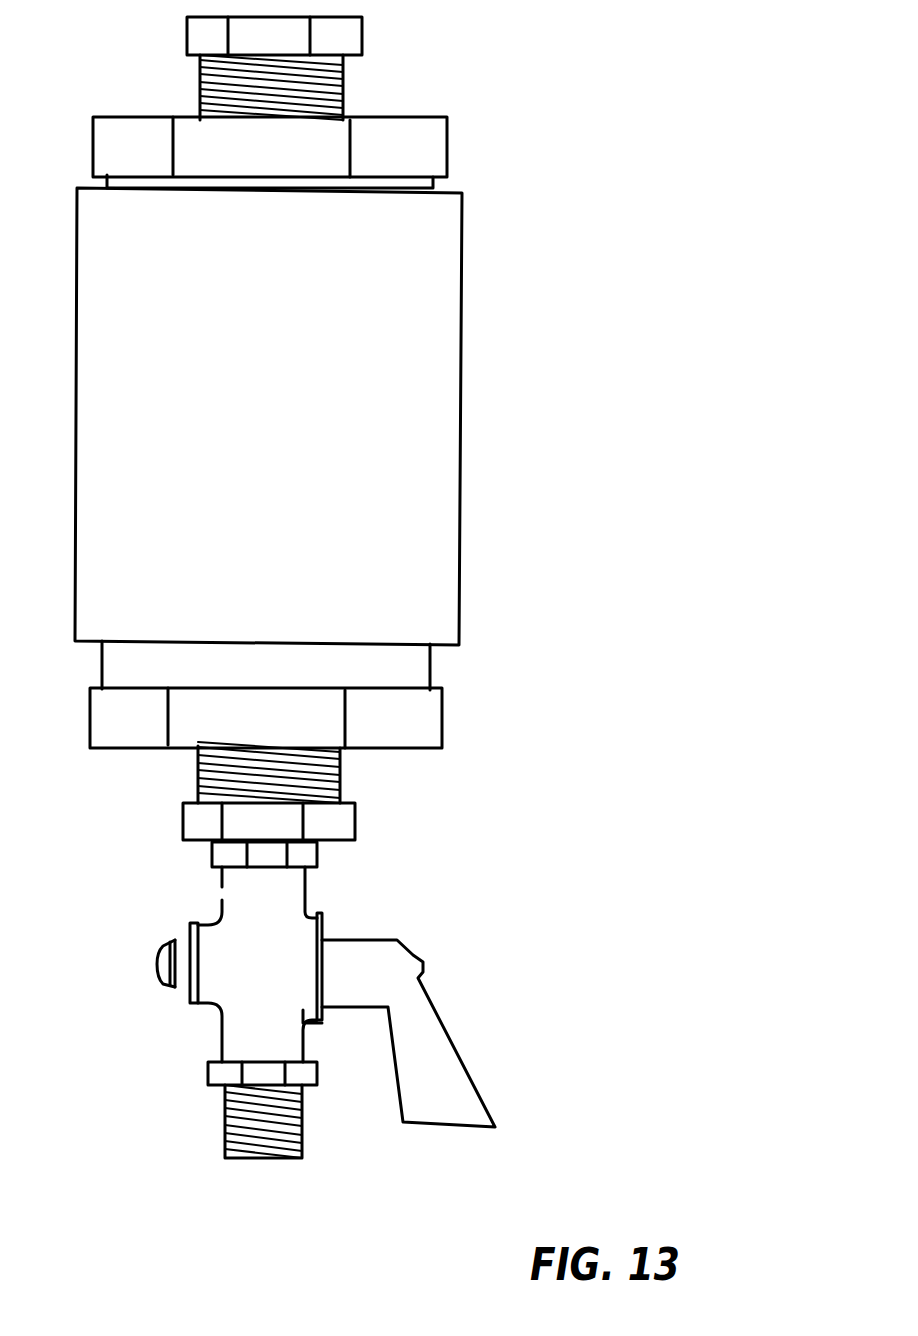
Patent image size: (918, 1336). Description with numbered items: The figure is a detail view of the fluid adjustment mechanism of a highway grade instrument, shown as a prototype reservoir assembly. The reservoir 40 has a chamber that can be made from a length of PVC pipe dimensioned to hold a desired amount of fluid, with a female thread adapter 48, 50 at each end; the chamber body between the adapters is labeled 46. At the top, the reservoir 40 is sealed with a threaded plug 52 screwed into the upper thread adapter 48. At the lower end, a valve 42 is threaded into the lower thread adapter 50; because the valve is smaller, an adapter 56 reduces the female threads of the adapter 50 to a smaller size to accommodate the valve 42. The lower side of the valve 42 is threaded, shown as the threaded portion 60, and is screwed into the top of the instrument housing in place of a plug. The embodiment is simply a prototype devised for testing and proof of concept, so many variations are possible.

The reservoir 40 is at (472, 483).
The valve 42 is at (242, 895).
The filter housing 46 is at (352, 305).
The female thread adapter 48 is at (425, 165).
The female thread adapter 50 is at (422, 733).
The threaded plug 52 is at (323, 40).
The adapter 56 is at (342, 830).
The threaded outlet fitting 60 is at (230, 1121).